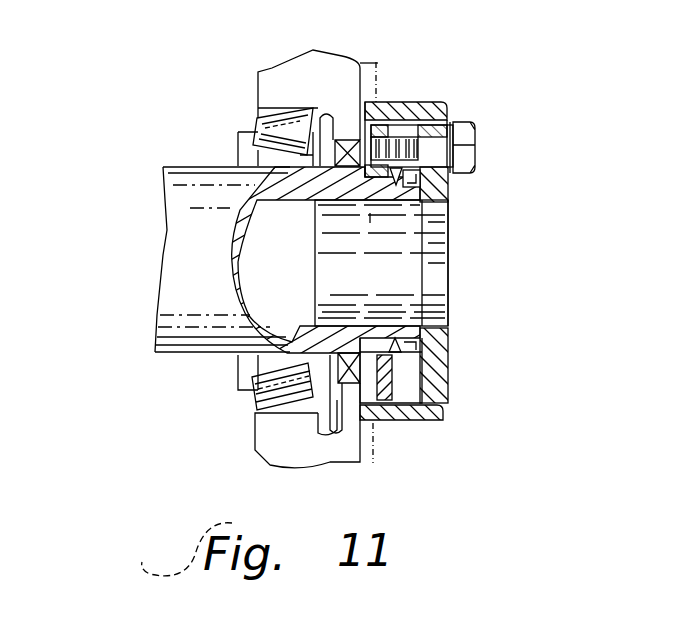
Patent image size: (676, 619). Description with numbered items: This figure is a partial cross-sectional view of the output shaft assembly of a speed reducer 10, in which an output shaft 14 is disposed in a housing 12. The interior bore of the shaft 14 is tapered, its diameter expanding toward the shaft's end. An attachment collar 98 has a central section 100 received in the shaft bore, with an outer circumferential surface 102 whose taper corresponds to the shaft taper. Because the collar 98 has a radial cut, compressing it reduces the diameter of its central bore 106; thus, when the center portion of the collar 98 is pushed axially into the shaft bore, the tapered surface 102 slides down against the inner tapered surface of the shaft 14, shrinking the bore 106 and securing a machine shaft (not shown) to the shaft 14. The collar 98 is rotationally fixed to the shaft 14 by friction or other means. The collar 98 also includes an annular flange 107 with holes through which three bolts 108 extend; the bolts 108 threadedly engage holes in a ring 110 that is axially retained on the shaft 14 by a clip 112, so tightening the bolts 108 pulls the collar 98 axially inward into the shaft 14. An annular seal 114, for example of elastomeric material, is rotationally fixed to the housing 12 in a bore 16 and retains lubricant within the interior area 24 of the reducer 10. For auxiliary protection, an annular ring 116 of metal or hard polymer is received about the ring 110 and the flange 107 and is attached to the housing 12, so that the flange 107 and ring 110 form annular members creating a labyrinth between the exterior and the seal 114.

The speed reducer 10 is at (118, 112).
The housing 12 is at (342, 55).
The output shaft 14 is at (200, 360).
The bore 16 is at (346, 108).
The interior area 24 is at (212, 154).
The attachment collar 98 is at (448, 187).
The central section 100 is at (410, 190).
The outer circumferential surface 102 is at (320, 346).
The central bore 106 is at (432, 263).
The annular flange 107 is at (448, 385).
The bolts 108 is at (474, 130).
The ring 110 is at (392, 102).
The clip 112 is at (402, 352).
The annular seal 114 is at (340, 426).
The annular ring 116 is at (423, 420).